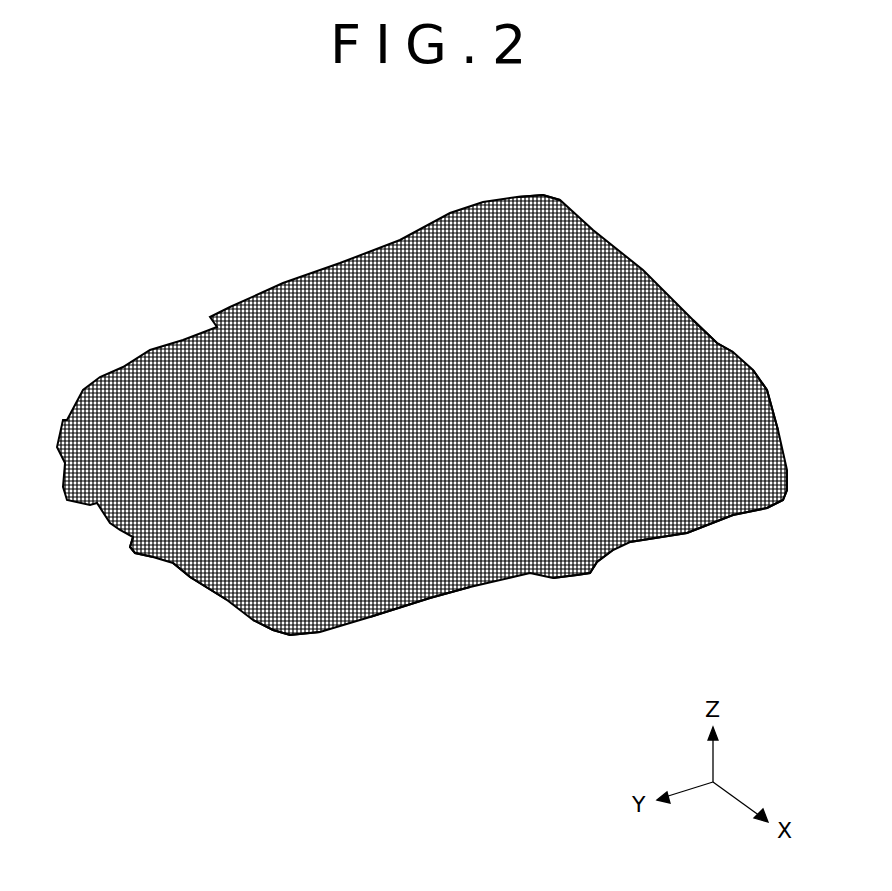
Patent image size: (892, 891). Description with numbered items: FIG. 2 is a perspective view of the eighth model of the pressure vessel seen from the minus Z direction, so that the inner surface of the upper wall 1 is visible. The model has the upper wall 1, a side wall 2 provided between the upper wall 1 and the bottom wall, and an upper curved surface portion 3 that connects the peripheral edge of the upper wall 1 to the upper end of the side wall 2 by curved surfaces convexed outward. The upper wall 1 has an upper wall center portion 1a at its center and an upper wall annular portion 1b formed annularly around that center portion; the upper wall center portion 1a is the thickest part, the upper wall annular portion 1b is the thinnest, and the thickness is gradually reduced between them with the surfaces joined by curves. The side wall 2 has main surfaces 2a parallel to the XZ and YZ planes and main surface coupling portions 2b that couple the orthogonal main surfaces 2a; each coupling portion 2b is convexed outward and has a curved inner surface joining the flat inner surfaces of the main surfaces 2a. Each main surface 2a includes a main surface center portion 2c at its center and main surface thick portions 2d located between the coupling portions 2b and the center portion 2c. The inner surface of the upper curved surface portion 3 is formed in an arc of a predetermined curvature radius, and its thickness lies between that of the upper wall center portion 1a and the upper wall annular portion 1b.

The upper wall 1 is at (283, 284).
The upper wall center portion 1a is at (563, 200).
The upper wall annular portion 1b is at (717, 342).
The side wall 2 is at (687, 535).
The main surface 2a is at (430, 603).
The main surface coupling portion 2b is at (282, 641).
The main surface center portion 2c is at (767, 510).
The main surface thick portion 2d is at (577, 578).
The upper curved surface portion 3 is at (765, 382).